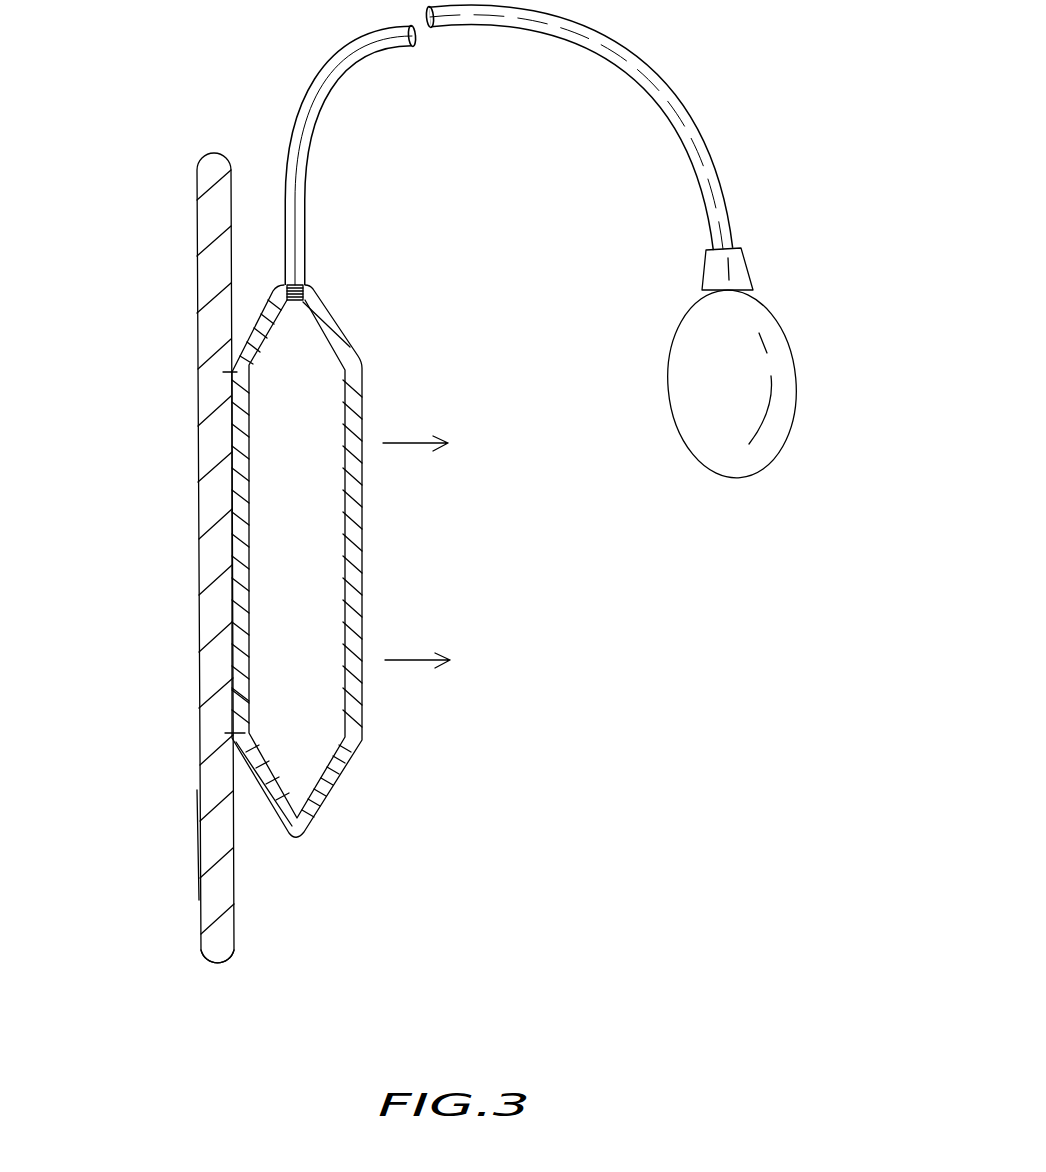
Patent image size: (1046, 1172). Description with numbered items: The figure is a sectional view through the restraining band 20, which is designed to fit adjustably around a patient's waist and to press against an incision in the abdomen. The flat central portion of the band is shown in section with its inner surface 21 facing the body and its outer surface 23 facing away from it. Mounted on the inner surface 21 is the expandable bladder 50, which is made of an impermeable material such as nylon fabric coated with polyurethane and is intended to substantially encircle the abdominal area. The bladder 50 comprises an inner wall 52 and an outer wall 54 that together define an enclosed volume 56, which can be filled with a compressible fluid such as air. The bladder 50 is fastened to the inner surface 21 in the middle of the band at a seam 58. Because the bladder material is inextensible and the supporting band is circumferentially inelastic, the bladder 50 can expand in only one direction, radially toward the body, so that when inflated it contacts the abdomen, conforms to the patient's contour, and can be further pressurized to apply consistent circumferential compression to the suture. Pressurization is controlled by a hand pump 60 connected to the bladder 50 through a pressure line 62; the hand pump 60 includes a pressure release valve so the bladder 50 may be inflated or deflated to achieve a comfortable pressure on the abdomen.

The restraining band 20 is at (197, 220).
The inner surface 21 is at (236, 897).
The outer surface 23 is at (197, 842).
The expandable bladder 50 is at (333, 795).
The inner wall 52 is at (358, 708).
The outer wall 54 is at (237, 560).
The enclosed volume 56 is at (320, 557).
The seam 58 is at (237, 697).
The hand pump 60 is at (784, 343).
The pressure line 62 is at (303, 208).